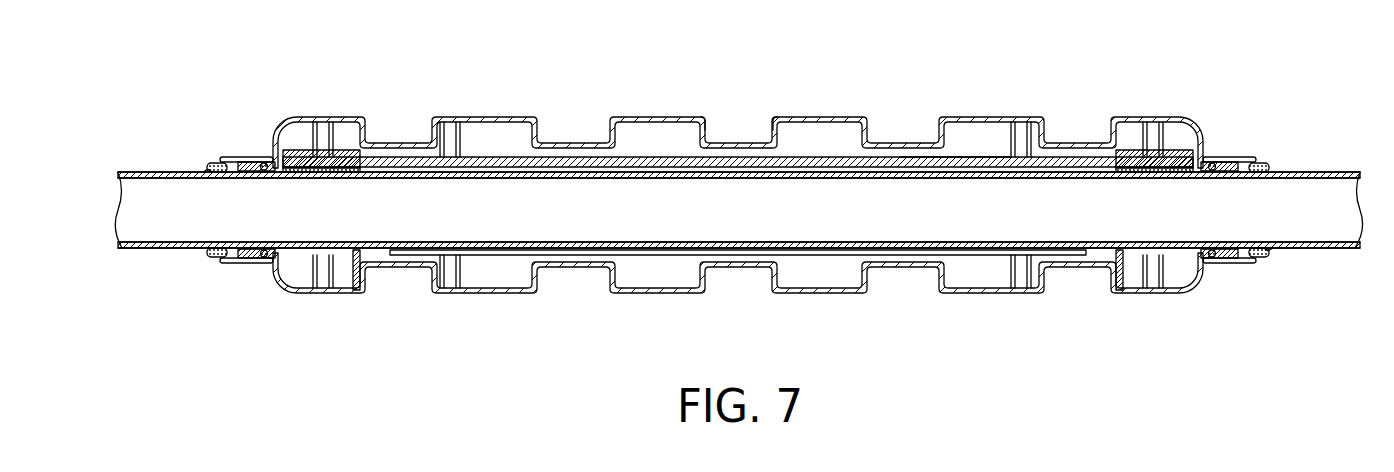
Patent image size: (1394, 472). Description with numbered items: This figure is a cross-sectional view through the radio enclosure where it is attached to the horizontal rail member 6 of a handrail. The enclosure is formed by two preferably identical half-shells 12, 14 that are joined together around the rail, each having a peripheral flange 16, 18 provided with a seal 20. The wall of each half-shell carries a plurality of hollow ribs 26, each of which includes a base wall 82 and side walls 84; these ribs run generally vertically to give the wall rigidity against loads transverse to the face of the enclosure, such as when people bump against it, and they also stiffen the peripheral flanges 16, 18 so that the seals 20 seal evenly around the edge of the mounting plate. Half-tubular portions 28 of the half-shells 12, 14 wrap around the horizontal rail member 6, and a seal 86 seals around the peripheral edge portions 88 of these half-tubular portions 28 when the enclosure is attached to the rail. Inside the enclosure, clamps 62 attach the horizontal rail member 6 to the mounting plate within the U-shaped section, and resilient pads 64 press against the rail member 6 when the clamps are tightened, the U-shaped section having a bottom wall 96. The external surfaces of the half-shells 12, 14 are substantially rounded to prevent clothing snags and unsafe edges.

The horizontal rail member 6 is at (1325, 170).
The half-shell 12 is at (862, 114).
The half-shell 14 is at (448, 311).
The peripheral flange 16 is at (230, 158).
The peripheral flange 18 is at (262, 264).
The seal 20 is at (250, 162).
The hollow rib 26 is at (562, 128).
The half-tubular portion 28 is at (263, 160).
The clamp 62 is at (352, 272).
The resilient pad 64 is at (347, 152).
The base wall 82 is at (741, 118).
The side wall 84 is at (712, 117).
The seal 86 is at (208, 170).
The peripheral edge portion 88 is at (215, 165).
The bottom wall 96 is at (960, 157).